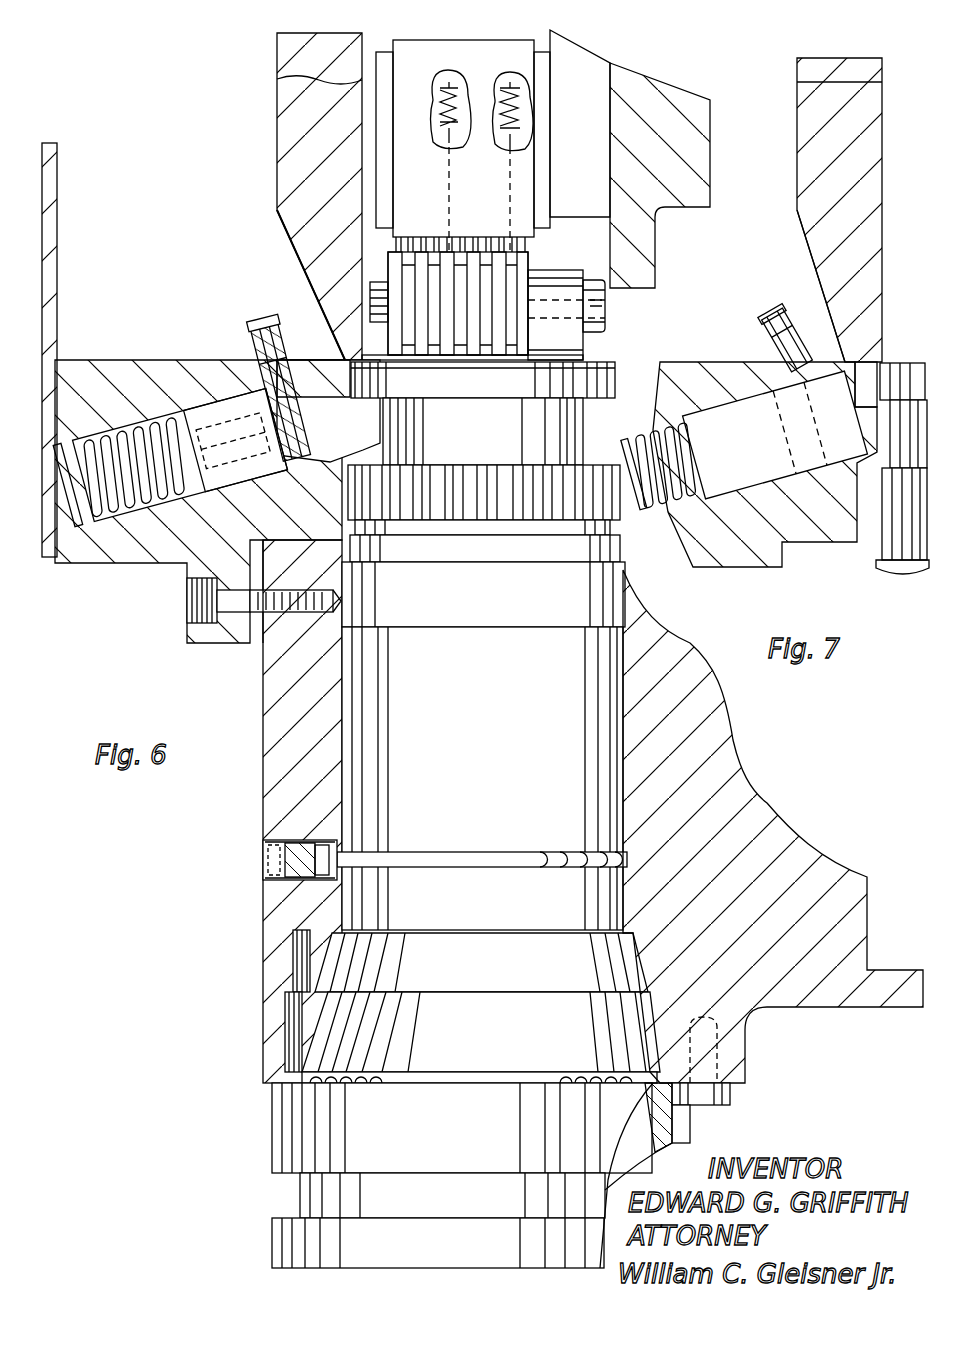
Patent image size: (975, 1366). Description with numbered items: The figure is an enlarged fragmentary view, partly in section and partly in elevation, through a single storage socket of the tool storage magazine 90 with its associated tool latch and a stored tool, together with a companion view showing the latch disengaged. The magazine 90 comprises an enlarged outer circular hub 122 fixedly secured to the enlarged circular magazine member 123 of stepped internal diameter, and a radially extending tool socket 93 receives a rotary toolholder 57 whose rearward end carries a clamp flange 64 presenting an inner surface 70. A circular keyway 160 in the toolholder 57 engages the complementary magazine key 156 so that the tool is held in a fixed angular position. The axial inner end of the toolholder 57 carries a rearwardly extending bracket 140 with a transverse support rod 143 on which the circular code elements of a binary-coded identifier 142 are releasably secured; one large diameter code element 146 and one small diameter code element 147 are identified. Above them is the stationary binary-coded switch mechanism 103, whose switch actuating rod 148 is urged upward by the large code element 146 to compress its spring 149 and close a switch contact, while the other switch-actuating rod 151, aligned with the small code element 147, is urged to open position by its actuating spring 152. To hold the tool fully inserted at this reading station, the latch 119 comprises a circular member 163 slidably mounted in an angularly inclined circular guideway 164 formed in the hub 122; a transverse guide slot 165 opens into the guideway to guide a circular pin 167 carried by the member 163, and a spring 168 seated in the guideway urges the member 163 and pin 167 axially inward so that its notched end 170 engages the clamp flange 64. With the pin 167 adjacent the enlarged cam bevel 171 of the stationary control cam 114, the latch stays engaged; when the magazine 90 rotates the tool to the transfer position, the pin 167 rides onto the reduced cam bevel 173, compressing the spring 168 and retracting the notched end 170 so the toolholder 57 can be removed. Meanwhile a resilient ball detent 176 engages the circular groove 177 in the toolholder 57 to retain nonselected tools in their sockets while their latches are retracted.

In FIG. 6, the rotary toolholder 57 is at (477, 766).
In FIG. 7, the rotary toolholder 57 is at (895, 550).
In FIG. 6, the clamp flange 64 is at (580, 377).
In FIG. 7, the clamp flange 64 is at (895, 363).
In FIG. 6, the surface 70 is at (512, 407).
In FIG. 7, the surface 70 is at (893, 403).
In FIG. 6, the tool storage magazine 90 is at (162, 675).
In FIG. 6, the tool socket 93 is at (358, 692).
In FIG. 6, the binary-coded switch mechanism 103 is at (467, 35).
In FIG. 6, the control cam 114 is at (292, 65).
In FIG. 7, the control cam 114 is at (826, 82).
In FIG. 6, the latch 119 is at (270, 310).
In FIG. 6, the magazine hub 122 is at (182, 565).
In FIG. 7, the magazine hub 122 is at (775, 565).
In FIG. 6, the magazine member 123 is at (737, 785).
In FIG. 6, the bracket 140 is at (567, 330).
In FIG. 6, the binary-coded identifier 142 is at (385, 269).
In FIG. 6, the support rod 143 is at (606, 302).
In FIG. 6, the large diameter code element 146 is at (447, 260).
In FIG. 6, the small diameter code element 147 is at (512, 280).
In FIG. 6, the switch actuating rod 148 is at (445, 135).
In FIG. 6, the spring 149 is at (460, 97).
In FIG. 6, the switch-actuating rod 151 is at (513, 190).
In FIG. 6, the actuating spring 152 is at (520, 106).
In FIG. 6, the magazine key 156 is at (710, 1090).
In FIG. 6, the keyway 160 is at (680, 1122).
In FIG. 6, the circular member 163 is at (182, 460).
In FIG. 7, the circular member 163 is at (775, 435).
In FIG. 6, the circular guideway 164 is at (128, 416).
In FIG. 7, the circular guideway 164 is at (666, 513).
In FIG. 6, the guide slot 165 is at (262, 367).
In FIG. 7, the guide slot 165 is at (775, 370).
In FIG. 6, the pin 167 is at (267, 355).
In FIG. 7, the pin 167 is at (776, 342).
In FIG. 6, the spring 168 is at (68, 525).
In FIG. 7, the spring 168 is at (639, 497).
In FIG. 6, the notched end 170 is at (375, 436).
In FIG. 7, the notched end 170 is at (868, 392).
In FIG. 6, the cam bevel 171 is at (282, 254).
In FIG. 7, the cam bevel 171 is at (808, 284).
In FIG. 6, the reduced cam bevel 173 is at (255, 352).
In FIG. 7, the reduced cam bevel 173 is at (779, 330).
In FIG. 6, the ball detent 176 is at (282, 870).
In FIG. 6, the circular groove 177 is at (357, 877).